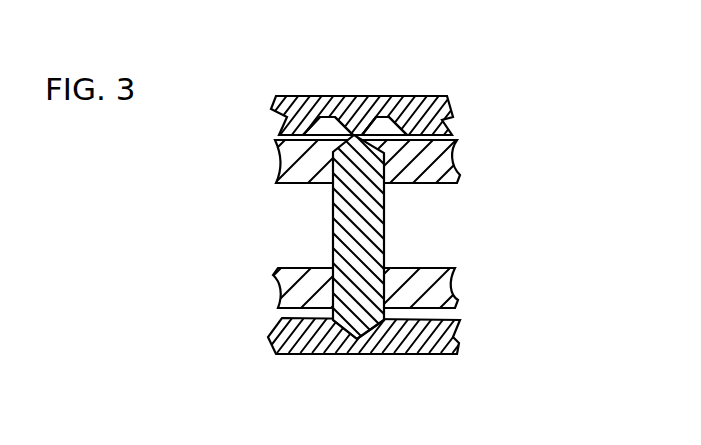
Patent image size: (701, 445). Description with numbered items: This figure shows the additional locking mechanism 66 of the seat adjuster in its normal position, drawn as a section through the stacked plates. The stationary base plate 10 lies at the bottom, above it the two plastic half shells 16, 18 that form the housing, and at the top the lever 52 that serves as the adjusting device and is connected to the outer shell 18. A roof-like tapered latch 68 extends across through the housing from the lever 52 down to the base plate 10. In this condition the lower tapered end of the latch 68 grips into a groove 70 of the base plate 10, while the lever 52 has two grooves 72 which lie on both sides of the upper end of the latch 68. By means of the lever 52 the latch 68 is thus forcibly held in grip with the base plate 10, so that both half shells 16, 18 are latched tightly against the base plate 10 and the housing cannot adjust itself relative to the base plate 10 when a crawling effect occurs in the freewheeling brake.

The base plate 10 is at (302, 355).
The half shell 16 is at (457, 285).
The outer half shell 18 is at (458, 160).
The lever 52 is at (436, 97).
The additional locking mechanism 66 is at (529, 120).
The latch 68 is at (384, 234).
The groove of the base plate 70 is at (376, 341).
The grooves of the lever 72 is at (310, 97).